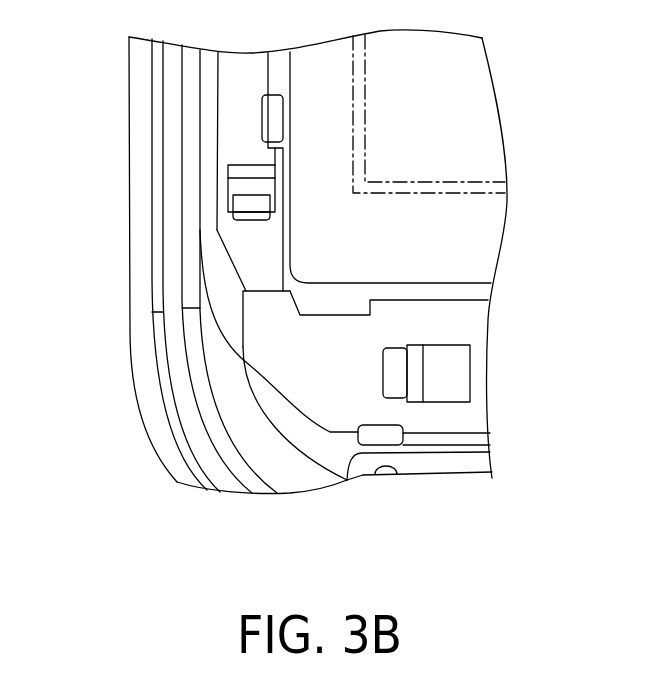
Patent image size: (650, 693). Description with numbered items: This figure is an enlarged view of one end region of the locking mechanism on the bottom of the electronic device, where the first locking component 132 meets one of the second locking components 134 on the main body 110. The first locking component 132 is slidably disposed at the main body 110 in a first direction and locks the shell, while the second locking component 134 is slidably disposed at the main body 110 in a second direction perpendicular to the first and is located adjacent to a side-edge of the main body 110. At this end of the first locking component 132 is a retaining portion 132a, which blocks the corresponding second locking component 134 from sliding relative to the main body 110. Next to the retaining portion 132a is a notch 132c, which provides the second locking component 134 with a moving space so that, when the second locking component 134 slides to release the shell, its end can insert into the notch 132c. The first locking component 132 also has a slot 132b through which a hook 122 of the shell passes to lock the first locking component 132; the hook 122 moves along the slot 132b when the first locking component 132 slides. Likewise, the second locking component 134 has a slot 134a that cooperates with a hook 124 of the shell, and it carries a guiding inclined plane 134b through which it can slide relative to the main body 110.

The main body 110 is at (257, 425).
The hook 122 is at (397, 375).
The hook 124 is at (257, 203).
The first locking component 132 is at (440, 422).
The retaining portion 132a is at (272, 318).
The slot 132b is at (443, 347).
The notch 132c is at (332, 312).
The second locking component 134 is at (228, 128).
The slot 134a is at (271, 172).
The guiding inclined plane 134b is at (233, 264).